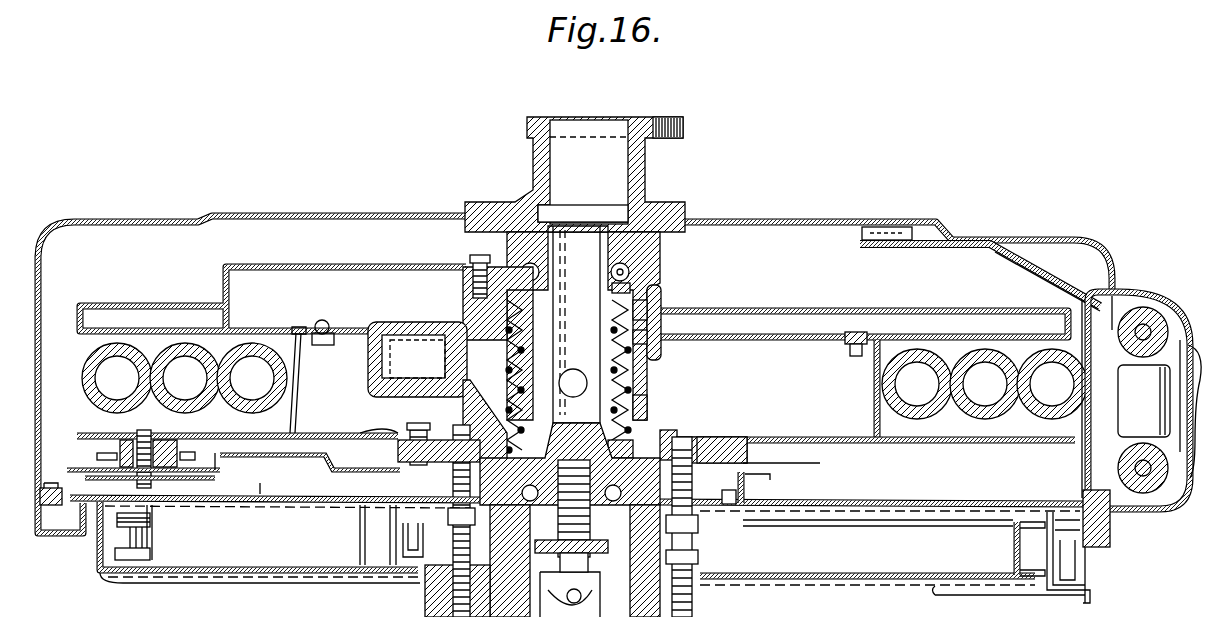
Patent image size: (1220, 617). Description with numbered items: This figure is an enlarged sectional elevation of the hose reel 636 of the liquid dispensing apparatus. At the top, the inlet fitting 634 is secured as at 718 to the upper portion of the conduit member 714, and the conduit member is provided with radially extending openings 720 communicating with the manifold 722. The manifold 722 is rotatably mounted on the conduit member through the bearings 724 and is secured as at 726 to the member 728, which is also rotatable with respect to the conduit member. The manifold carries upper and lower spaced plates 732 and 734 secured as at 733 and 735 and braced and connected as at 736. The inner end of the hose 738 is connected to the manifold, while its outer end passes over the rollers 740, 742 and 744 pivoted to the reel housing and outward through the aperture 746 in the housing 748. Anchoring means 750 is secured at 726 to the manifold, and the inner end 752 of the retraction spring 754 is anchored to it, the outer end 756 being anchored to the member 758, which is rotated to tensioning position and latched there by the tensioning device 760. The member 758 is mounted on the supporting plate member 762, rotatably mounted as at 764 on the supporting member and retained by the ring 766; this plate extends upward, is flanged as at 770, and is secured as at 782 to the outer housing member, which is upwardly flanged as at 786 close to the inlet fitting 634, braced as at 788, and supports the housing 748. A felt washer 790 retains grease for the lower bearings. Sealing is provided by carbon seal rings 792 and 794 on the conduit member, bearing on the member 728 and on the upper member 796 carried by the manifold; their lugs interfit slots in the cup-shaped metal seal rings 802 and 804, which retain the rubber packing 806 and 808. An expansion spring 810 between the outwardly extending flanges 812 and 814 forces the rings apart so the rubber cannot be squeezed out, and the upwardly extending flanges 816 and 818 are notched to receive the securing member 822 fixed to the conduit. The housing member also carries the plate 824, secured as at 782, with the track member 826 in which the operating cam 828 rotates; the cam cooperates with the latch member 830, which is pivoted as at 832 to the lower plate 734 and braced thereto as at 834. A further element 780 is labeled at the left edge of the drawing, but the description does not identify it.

The inlet fitting 634 is at (648, 158).
The upward flange 786 is at (465, 208).
The securing point 718 is at (583, 172).
The bearings 724 is at (640, 245).
The hose reel 636 is at (940, 222).
The bracing 788 is at (1023, 260).
The roller 742 is at (1140, 310).
The housing 748 is at (1175, 295).
The securing point 733 is at (466, 266).
The conduit member 714 is at (520, 268).
The upper member 796 is at (632, 272).
The carbon seal ring 794 is at (640, 300).
The rubber packing 808 is at (648, 300).
The metal seal ring 804 is at (640, 322).
The manifold 722 is at (665, 345).
The upper plate 732 is at (895, 338).
The hose 738 is at (932, 352).
The outwardly extending flange 814 is at (500, 310).
The upwardly extending flange 818 is at (510, 355).
The openings 720 is at (580, 365).
The expansion spring 810 is at (650, 362).
The metal seal ring 802 is at (650, 405).
The rubber packing 806 is at (660, 440).
The securing member 822 is at (505, 372).
The bracing connection 736 is at (872, 384).
The roller 744 is at (1144, 401).
The pivot 832 is at (130, 430).
The brace 834 is at (296, 420).
The operating cam 828 is at (305, 440).
The outwardly extending flange 812 is at (418, 428).
The upwardly extending flange 816 is at (505, 430).
The latch member 830 is at (115, 455).
The carbon seal ring 792 is at (668, 432).
The member 728 is at (708, 438).
The securing point 726 is at (400, 454).
The securing point 735 is at (307, 473).
The track member 826 is at (752, 472).
The lower plate 734 is at (845, 444).
The plate 824 is at (960, 500).
The securing point 782 is at (72, 506).
The flange 770 is at (82, 535).
The retraction spring 754 is at (155, 528).
The outer end 756 is at (155, 548).
The inner end 752 is at (400, 540).
The anchoring means 750 is at (745, 531).
The member 758 is at (1012, 541).
The felt washer 790 is at (645, 524).
The roller 740 is at (1137, 495).
The aperture 746 is at (1185, 485).
The tensioning device 760 is at (1092, 588).
The ring 766 is at (420, 585).
The rotatable mounting 764 is at (700, 596).
The supporting plate member 762 is at (825, 580).
The outer casing 780 is at (30, 455).